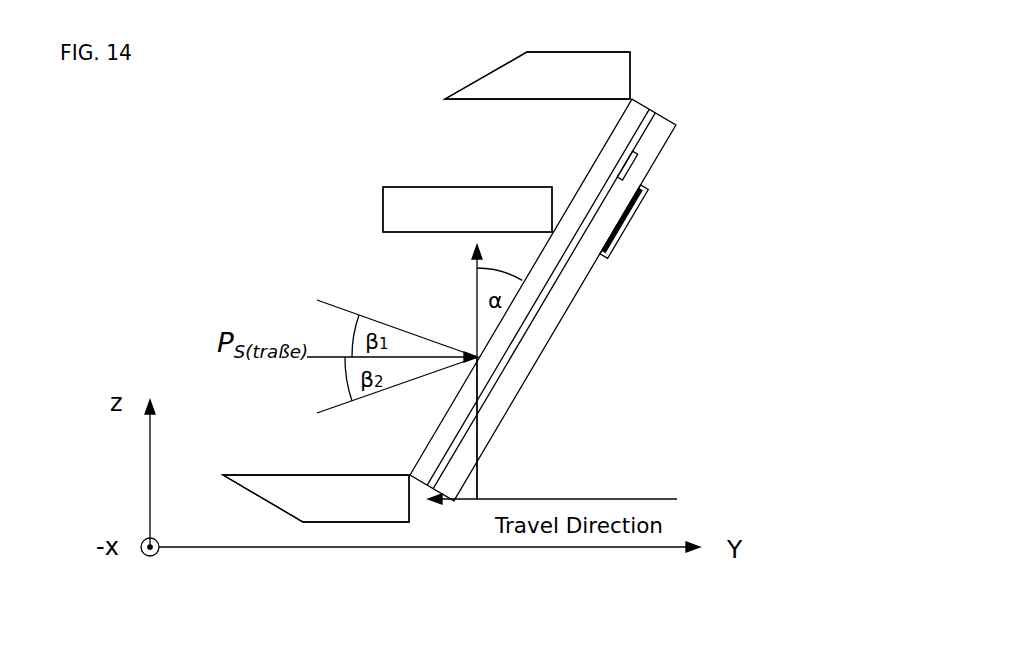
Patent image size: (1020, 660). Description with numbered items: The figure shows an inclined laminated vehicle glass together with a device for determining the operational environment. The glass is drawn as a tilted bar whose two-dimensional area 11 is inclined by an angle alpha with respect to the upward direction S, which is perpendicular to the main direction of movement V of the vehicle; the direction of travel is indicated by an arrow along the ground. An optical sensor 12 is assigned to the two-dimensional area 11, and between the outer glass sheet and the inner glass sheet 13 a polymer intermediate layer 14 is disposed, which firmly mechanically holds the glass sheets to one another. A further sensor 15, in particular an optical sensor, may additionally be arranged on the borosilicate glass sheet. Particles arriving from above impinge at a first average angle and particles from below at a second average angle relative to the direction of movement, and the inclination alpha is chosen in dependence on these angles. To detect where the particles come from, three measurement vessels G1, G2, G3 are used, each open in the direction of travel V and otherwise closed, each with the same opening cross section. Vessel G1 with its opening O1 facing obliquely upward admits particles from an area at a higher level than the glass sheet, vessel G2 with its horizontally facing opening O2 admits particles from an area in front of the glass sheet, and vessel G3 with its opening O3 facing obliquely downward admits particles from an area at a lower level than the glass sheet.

The two-dimensional area 11 is at (628, 224).
The optical sensor 12 is at (614, 247).
The inner glass sheet 13 is at (547, 318).
The polymer intermediate layer 14 is at (505, 361).
The sensor 15 is at (630, 167).
The upward direction S is at (479, 475).
The main direction of movement V is at (593, 499).
The opening of vessel G1 O1 is at (490, 73).
The measurement vessel G1 is at (603, 78).
The opening of vessel G2 O2 is at (383, 214).
The measurement vessel G2 is at (438, 210).
The opening of vessel G3 O3 is at (283, 508).
The measurement vessel G3 is at (280, 487).